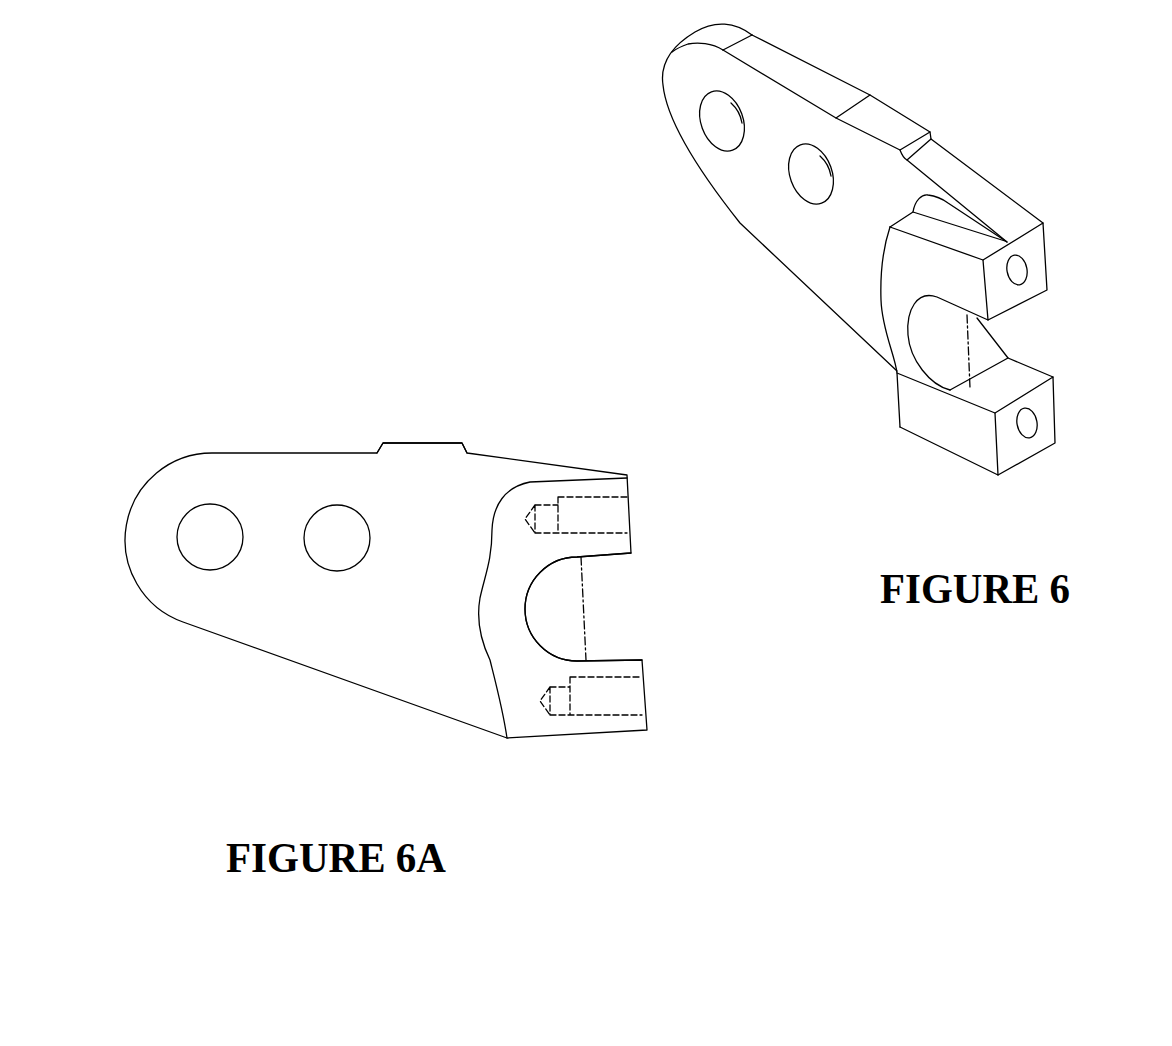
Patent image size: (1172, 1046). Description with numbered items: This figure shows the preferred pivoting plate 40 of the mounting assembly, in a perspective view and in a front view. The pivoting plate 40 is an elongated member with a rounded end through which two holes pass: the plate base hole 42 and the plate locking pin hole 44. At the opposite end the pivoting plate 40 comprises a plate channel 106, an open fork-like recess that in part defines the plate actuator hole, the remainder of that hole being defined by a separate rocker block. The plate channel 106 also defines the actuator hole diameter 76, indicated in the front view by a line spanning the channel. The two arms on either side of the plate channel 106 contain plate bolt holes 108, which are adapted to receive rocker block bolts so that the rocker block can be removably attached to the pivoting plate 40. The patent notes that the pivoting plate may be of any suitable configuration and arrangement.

In FIG. 6, the pivoting plate 40 is at (910, 117).
In FIG. 6A, the pivoting plate 40 is at (403, 442).
In FIG. 6, the plate base hole 42 is at (723, 125).
In FIG. 6A, the plate base hole 42 is at (193, 530).
In FIG. 6, the plate locking pin hole 44 is at (813, 177).
In FIG. 6A, the plate locking pin hole 44 is at (322, 520).
In FIG. 6, the actuator hole diameter 76 is at (967, 352).
In FIG. 6A, the actuator hole diameter 76 is at (590, 630).
In FIG. 6, the plate channel 106 is at (1030, 334).
In FIG. 6A, the plate channel 106 is at (605, 593).
In FIG. 6, the plate bolt holes 108 is at (1017, 268).
In FIG. 6A, the plate bolt holes 108 is at (617, 513).